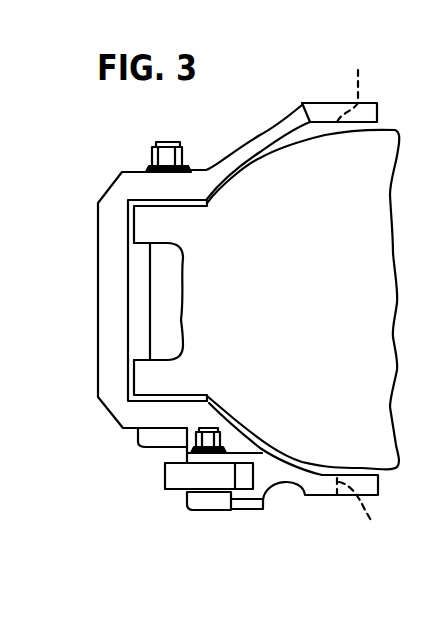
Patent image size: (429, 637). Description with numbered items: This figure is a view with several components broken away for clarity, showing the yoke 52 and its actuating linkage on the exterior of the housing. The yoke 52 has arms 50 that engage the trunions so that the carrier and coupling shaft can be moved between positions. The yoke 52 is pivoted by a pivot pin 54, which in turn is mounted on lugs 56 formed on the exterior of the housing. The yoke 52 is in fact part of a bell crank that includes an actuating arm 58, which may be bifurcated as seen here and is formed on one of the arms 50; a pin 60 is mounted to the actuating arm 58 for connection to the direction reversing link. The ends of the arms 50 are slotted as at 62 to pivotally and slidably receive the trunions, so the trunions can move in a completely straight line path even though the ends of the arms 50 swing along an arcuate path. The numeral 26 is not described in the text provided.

The curved arm 26 is at (243, 168).
The arms 50 is at (284, 113).
The yoke 52 is at (110, 197).
The pivot pin 54 is at (160, 282).
The lugs 56 is at (150, 228).
The actuating arm 58 is at (190, 512).
The pin 60 is at (220, 440).
The slots 62 is at (382, 533).